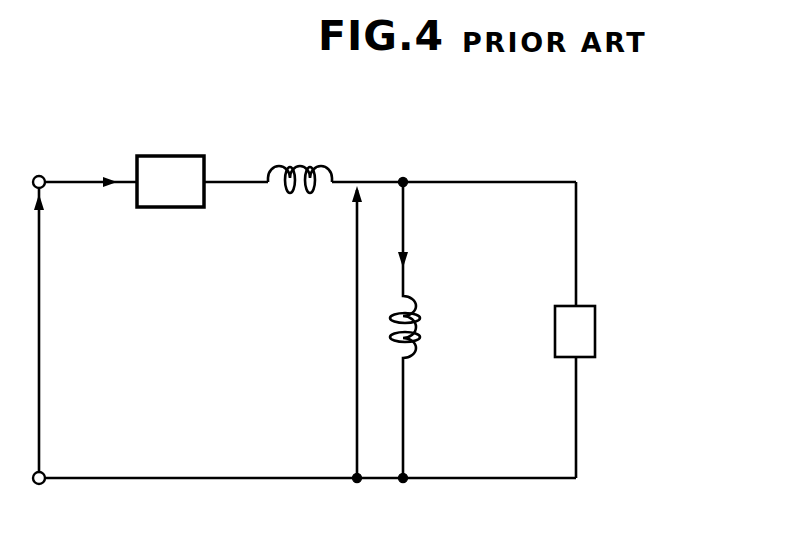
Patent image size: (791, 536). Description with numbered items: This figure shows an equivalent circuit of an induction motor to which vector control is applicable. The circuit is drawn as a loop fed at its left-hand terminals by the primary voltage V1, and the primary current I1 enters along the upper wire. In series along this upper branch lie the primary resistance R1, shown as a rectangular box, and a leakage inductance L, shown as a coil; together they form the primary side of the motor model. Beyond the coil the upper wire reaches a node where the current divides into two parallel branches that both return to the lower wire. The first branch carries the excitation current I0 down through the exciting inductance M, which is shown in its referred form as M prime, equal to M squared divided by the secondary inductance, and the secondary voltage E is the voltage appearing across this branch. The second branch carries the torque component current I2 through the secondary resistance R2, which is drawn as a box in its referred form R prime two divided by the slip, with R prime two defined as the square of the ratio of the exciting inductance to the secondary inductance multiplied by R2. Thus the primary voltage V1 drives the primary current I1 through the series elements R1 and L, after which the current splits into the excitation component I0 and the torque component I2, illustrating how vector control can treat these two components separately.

The primary current I1 is at (88, 165).
The primary voltage V1 is at (55, 268).
The primary resistance R1 is at (170, 166).
The leakage inductance L is at (300, 163).
The secondary voltage E is at (345, 332).
The torque component current I2 is at (488, 160).
The excitation current I0 is at (416, 237).
The exciting inductance M is at (463, 329).
The secondary resistance R2 is at (645, 337).